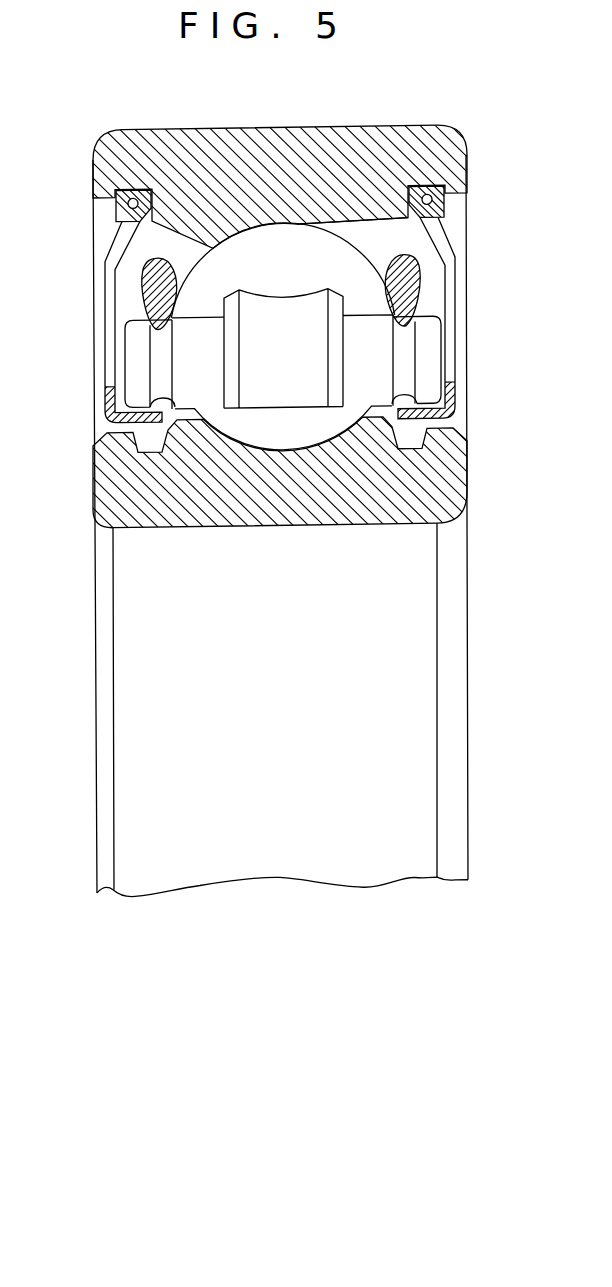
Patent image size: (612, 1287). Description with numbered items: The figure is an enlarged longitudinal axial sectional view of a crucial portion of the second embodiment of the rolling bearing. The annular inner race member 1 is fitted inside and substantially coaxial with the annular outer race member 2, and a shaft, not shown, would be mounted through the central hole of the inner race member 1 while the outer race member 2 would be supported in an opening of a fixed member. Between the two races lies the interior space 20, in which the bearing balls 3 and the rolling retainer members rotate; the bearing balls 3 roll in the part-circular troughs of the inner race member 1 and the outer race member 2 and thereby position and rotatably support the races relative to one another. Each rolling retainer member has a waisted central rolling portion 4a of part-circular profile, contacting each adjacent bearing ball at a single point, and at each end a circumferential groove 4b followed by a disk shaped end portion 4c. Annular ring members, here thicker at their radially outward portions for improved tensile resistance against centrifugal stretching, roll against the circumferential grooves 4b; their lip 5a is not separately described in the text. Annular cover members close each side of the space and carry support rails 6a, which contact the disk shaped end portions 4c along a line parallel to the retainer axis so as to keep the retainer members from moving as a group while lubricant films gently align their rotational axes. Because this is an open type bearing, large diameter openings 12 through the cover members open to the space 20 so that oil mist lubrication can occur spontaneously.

The inner race member 1 is at (123, 487).
The outer race member 2 is at (440, 162).
The bearing balls 3 is at (223, 259).
The central rolling portion 4a is at (297, 336).
The circumferential groove 4b is at (172, 320).
The disk shaped end portion 4c is at (135, 354).
The seal lip 5a is at (152, 271).
The support rail 6a is at (437, 418).
The large diameter openings 12 is at (108, 284).
The interior space 20 is at (392, 248).